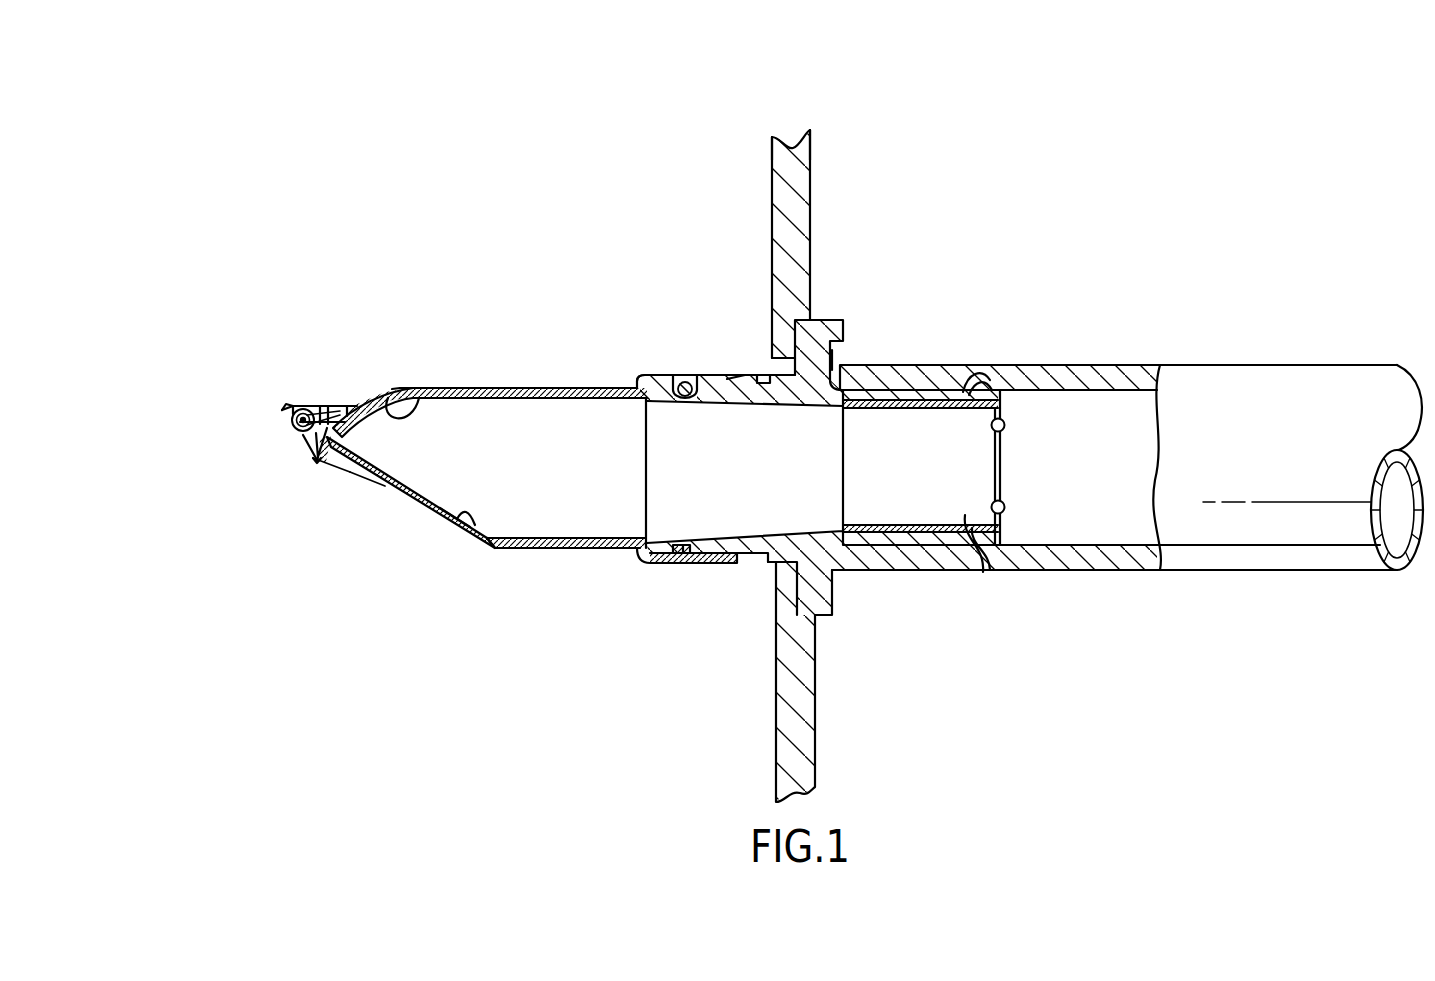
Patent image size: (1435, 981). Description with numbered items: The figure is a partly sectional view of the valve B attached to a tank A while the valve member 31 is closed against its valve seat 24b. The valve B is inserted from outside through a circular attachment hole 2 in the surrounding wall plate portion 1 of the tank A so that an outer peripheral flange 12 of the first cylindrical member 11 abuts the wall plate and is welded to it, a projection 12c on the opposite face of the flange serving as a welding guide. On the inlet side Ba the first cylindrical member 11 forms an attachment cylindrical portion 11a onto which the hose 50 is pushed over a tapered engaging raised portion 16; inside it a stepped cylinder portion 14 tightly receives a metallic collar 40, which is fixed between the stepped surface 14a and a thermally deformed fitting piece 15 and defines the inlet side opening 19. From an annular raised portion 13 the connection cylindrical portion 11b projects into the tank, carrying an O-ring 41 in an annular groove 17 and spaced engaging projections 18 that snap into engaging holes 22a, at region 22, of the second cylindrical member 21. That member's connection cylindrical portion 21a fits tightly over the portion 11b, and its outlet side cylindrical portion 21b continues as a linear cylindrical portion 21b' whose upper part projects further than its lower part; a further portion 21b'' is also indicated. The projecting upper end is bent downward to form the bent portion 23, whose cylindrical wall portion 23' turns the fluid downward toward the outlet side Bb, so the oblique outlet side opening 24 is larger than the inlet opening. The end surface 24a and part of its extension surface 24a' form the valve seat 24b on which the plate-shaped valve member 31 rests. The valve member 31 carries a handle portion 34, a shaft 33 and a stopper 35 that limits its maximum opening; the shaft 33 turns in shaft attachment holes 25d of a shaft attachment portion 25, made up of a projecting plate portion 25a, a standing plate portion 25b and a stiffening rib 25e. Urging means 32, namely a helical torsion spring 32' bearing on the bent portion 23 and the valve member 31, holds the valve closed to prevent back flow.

The surrounding wall plate portion 1 is at (800, 137).
The tank A is at (810, 143).
The valve B is at (641, 376).
The inlet side Ba is at (998, 386).
The outlet side Bb is at (398, 398).
The attachment hole 2 is at (763, 373).
The first cylindrical member 11 is at (873, 548).
The attachment cylindrical portion 11a is at (928, 548).
The connection cylindrical portion 11b is at (757, 565).
The outer peripheral flange 12 is at (815, 320).
The projection 12c is at (846, 320).
The annular raised portion 13 is at (771, 372).
The stepped cylinder portion 14 is at (930, 417).
The stepped surface 14a is at (846, 380).
The fitting piece 15 is at (1060, 509).
The engaging raised portion 16 is at (972, 378).
The annular groove 17 is at (647, 375).
The engaging projections 18 is at (718, 377).
The inlet side opening 19 is at (1002, 462).
The second cylindrical member 21 is at (545, 387).
The connection cylindrical portion 21a is at (652, 565).
The outlet side cylindrical portion 21b is at (532, 588).
The linear cylindrical portion 21b' is at (575, 604).
The sheath wall end portion 21b'' is at (453, 359).
The ring 22 is at (740, 375).
The engaging holes 22a is at (688, 382).
The bent portion 23 is at (373, 383).
The cylindrical wall portion 23' is at (420, 350).
The outlet side opening 24 is at (375, 480).
The end surface 24a is at (465, 599).
The extension surface 24a' is at (335, 498).
The valve seat 24b is at (497, 528).
The shaft attachment portion 25 is at (298, 388).
The projecting plate portion 25a is at (316, 466).
The standing plate portion 25b is at (322, 405).
The shaft attachment holes 25d is at (300, 421).
The stiffening rib 25e is at (347, 405).
The valve member 31 is at (466, 530).
The urging means 32 is at (241, 409).
The helical torsion spring 32' is at (271, 403).
The shaft 33 is at (300, 431).
The handle portion 34 is at (306, 441).
The stopper 35 is at (283, 403).
The metallic collar 40 is at (972, 568).
The O-ring 41 is at (682, 556).
The hose 50 is at (1310, 365).